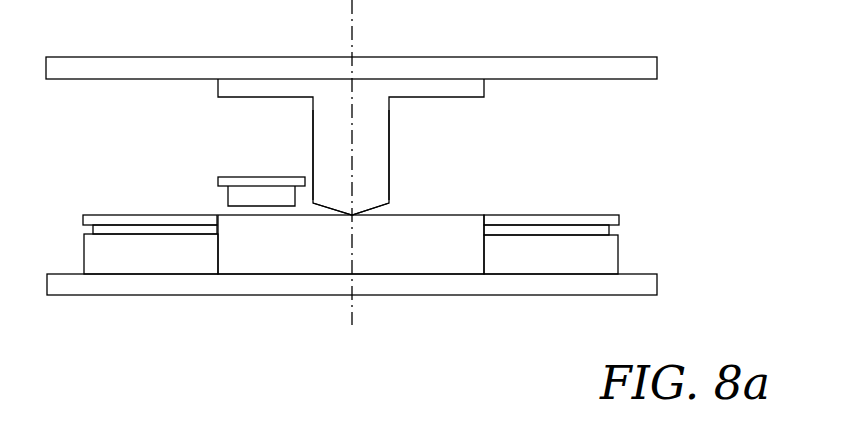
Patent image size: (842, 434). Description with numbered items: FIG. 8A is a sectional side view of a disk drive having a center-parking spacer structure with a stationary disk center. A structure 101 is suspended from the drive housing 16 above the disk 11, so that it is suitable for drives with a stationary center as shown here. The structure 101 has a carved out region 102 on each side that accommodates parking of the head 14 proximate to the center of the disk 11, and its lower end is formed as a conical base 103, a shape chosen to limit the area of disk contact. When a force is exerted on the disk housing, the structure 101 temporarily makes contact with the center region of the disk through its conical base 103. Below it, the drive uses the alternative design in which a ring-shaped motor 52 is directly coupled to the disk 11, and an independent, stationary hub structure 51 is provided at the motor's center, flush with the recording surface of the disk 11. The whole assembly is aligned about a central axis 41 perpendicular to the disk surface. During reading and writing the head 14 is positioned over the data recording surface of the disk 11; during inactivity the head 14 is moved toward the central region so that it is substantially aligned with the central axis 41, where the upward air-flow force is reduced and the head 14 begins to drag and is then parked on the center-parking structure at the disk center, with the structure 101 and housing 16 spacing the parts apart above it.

The drive housing 16 is at (553, 62).
The structure 101 is at (380, 88).
The central axis 41 is at (354, 10).
The carved out region 102 is at (292, 138).
The conical base 103 is at (391, 210).
The stationary hub structure 51 is at (410, 265).
The ring-shaped motor 52 is at (614, 258).
The disk 11 is at (596, 214).
The head 14 is at (225, 198).